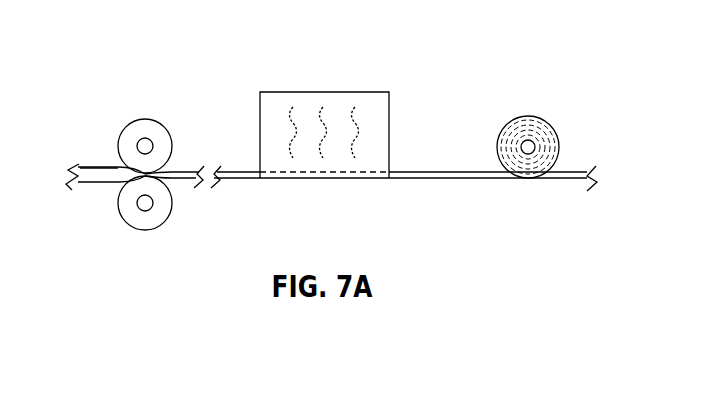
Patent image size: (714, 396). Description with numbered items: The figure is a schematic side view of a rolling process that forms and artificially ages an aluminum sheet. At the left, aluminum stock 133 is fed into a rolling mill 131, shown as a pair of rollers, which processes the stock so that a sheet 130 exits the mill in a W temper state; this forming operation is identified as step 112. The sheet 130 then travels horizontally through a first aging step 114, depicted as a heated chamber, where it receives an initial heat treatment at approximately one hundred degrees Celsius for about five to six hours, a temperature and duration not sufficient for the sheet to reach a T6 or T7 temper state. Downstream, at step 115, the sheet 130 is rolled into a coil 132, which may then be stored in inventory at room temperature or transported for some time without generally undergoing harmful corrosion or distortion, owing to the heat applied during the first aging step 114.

The forming step 112 is at (77, 80).
The first aging step 114 is at (255, 80).
The coiling step 115 is at (460, 80).
The sheet 130 is at (176, 168).
The rolling mill 131 is at (118, 203).
The coil 132 is at (547, 118).
The aluminum stock 133 is at (98, 166).